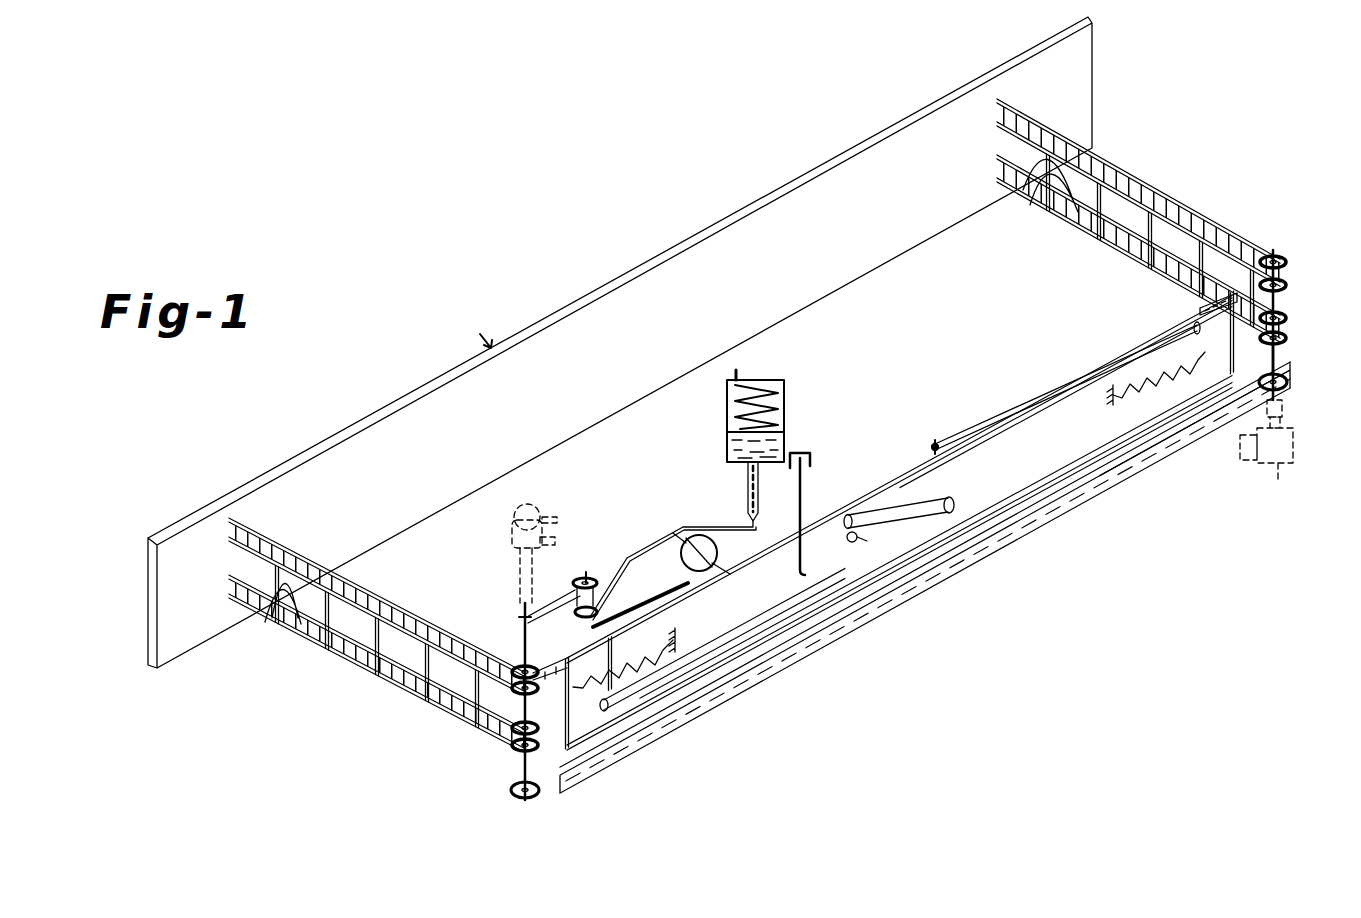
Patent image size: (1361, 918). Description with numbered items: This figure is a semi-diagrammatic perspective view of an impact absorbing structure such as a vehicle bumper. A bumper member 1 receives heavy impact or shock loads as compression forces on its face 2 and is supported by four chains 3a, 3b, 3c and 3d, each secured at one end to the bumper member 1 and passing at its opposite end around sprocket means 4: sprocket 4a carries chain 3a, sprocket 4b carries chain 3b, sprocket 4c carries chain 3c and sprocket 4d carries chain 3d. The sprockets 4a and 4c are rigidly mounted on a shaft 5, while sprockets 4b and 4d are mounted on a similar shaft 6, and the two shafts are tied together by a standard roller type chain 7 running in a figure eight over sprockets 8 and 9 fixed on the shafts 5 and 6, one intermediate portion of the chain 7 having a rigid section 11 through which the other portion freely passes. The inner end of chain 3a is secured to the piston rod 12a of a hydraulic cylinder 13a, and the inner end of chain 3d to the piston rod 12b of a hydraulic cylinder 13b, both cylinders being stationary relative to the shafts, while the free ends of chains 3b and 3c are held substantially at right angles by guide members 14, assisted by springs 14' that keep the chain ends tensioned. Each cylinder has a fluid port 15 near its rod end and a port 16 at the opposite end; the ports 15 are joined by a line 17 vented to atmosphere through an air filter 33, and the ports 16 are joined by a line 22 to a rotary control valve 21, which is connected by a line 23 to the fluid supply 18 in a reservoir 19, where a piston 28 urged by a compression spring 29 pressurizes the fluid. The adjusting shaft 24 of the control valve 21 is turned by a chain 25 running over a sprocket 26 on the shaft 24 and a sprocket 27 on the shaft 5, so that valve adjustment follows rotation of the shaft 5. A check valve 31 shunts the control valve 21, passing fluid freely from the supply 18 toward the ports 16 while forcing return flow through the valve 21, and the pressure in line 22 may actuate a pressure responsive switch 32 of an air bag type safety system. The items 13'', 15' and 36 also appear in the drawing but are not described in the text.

The bumper member 1 is at (481, 330).
The face 2 is at (434, 384).
The chain 3a is at (370, 594).
The chain 3b is at (1136, 171).
The chain 3c is at (372, 681).
The chain 3d is at (1082, 228).
The sprocket means 4 is at (510, 714).
The sprocket 4a is at (540, 660).
The sprocket 4b is at (1289, 262).
The sprocket 4c is at (512, 748).
The sprocket 4d is at (1289, 337).
The shaft 5 is at (533, 724).
The shaft 6 is at (1282, 367).
The roller type chain 7 is at (1192, 428).
The sprocket 8 is at (532, 797).
The sprocket 9 is at (1285, 385).
The rigid section 11 is at (772, 667).
The piston rod 12a is at (703, 598).
The piston rod 12b is at (1026, 488).
The hydraulic cylinder 13a is at (1010, 434).
The hydraulic cylinder 13b is at (908, 547).
The phantom connector 13'' is at (906, 501).
The guide member 14 is at (925, 541).
The spring 14' is at (889, 558).
The fluid port 15 is at (918, 500).
The cylinder end fitting 15' is at (842, 545).
The port 16 is at (600, 708).
The line 17 is at (806, 494).
The fluid supply 18 is at (780, 448).
The reservoir 19 is at (786, 414).
The control valve 21 is at (596, 588).
The line 22 is at (655, 598).
The line 23 is at (682, 523).
The adjusting shaft 24 is at (574, 614).
The chain 25 is at (548, 593).
The sprocket 26 is at (588, 576).
The sprocket 27 is at (521, 616).
The piston 28 is at (727, 432).
The compression spring 29 is at (786, 397).
The check valve 31 is at (718, 550).
The pressure responsive switch 32 is at (934, 446).
The air filter 33 is at (812, 456).
The tie loop 36 is at (306, 622).